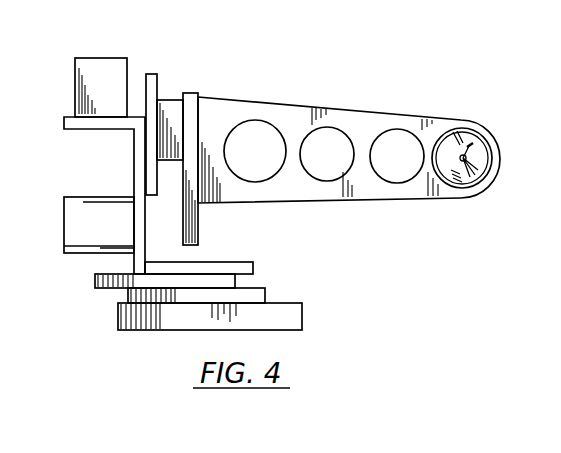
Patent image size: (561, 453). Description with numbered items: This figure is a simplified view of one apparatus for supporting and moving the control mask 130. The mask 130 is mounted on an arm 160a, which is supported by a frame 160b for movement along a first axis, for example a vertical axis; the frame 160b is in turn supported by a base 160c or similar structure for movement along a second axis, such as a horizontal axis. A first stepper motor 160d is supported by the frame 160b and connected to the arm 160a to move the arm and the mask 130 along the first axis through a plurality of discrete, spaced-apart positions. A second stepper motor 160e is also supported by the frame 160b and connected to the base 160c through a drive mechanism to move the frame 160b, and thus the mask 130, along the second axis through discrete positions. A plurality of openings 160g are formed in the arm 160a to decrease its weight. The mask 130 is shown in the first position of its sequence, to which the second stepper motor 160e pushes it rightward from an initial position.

The mask 130 is at (472, 120).
The arm 160a is at (344, 110).
The frame 160b is at (136, 155).
The base 160c is at (288, 305).
The first stepper motor 160d is at (100, 63).
The second stepper motor 160e is at (88, 248).
The openings 160g is at (248, 182).